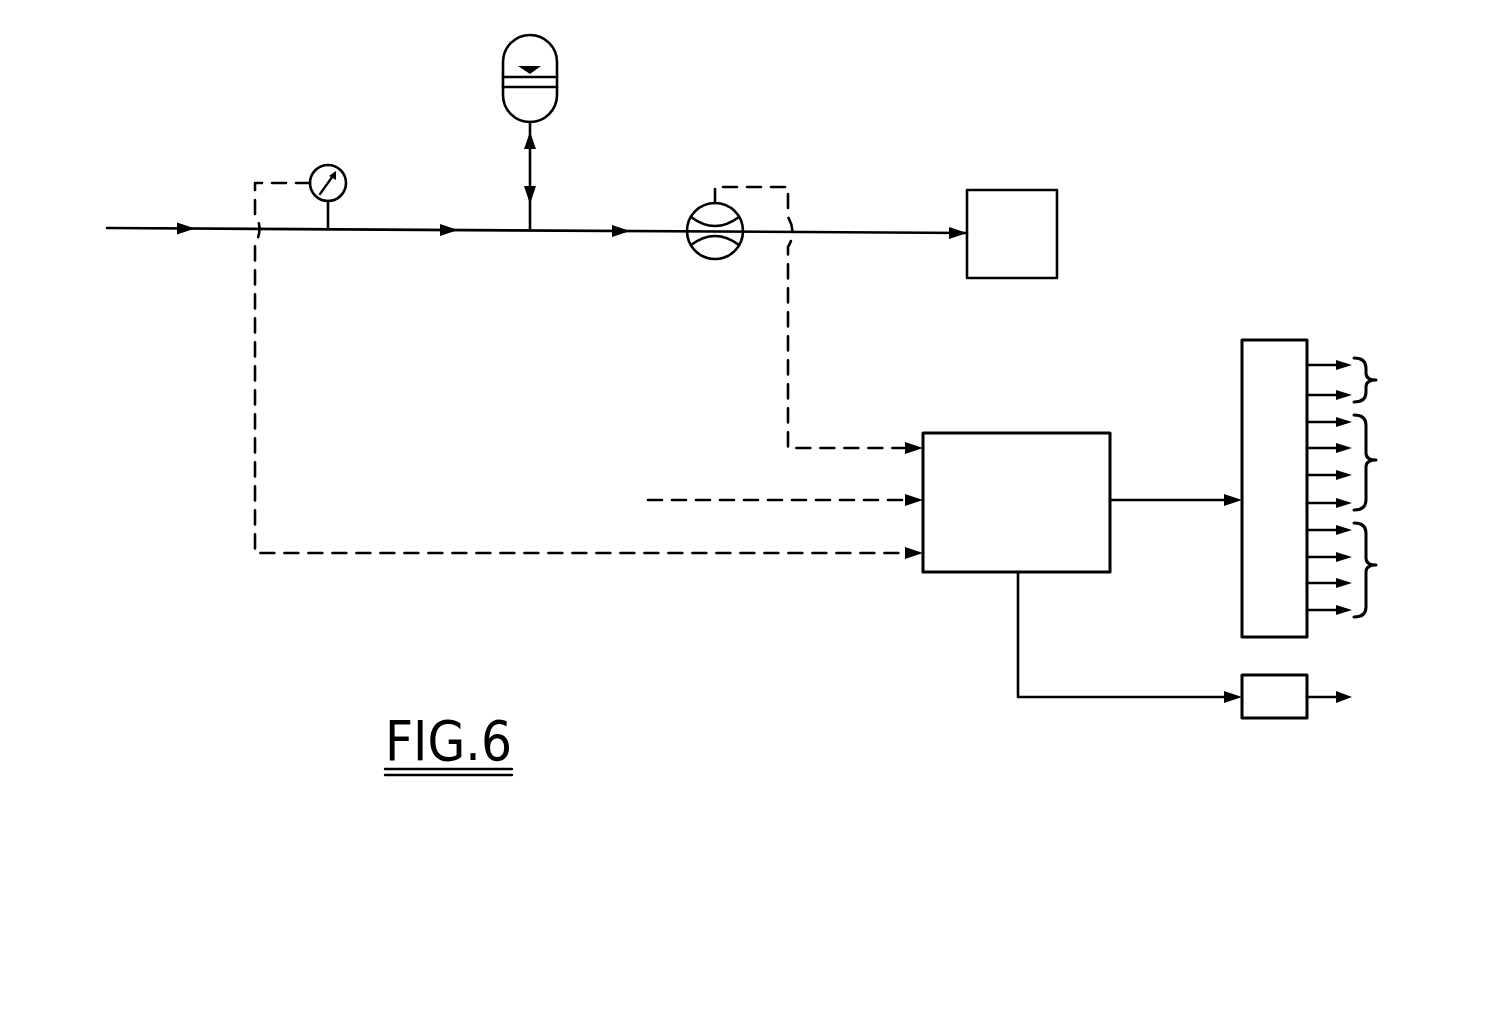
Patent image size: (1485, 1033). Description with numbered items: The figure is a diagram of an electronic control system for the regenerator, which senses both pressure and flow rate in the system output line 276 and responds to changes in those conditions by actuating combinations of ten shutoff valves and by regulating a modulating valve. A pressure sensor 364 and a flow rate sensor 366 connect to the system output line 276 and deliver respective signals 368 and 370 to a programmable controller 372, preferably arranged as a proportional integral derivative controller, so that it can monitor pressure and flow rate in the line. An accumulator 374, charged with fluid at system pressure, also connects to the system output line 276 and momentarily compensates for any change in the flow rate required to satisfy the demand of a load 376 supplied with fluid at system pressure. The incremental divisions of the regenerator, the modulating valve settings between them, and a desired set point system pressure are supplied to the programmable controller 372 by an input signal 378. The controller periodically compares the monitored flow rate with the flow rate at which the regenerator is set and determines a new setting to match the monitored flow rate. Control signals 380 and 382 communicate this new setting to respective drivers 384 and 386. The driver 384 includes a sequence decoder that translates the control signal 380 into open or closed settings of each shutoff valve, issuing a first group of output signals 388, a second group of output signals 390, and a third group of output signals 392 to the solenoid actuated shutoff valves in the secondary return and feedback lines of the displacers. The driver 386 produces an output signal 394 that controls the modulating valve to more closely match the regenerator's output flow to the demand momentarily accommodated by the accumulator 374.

The system output line 276 is at (160, 228).
The pressure sensor 364 is at (341, 170).
The flow rate sensor 366 is at (700, 258).
The pressure signal 368 is at (256, 362).
The flow rate signal 370 is at (788, 370).
The programmable controller 372 is at (1000, 433).
The accumulator 374 is at (557, 73).
The load 376 is at (1018, 190).
The input signal 378 is at (729, 498).
The control signal 380 is at (1220, 472).
The control signal 382 is at (1148, 695).
The driver 384 is at (1242, 378).
The driver 386 is at (1278, 718).
The first group of output signals 388 is at (1378, 380).
The second group of output signals 390 is at (1378, 460).
The third group of output signals 392 is at (1378, 565).
The output signal 394 is at (1325, 700).